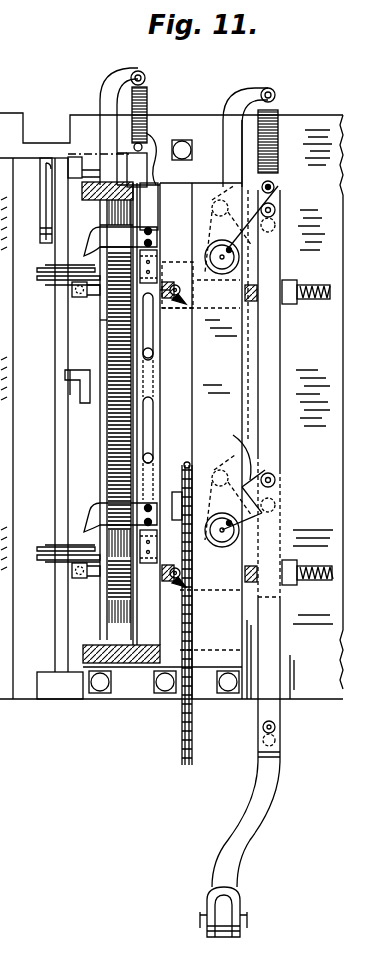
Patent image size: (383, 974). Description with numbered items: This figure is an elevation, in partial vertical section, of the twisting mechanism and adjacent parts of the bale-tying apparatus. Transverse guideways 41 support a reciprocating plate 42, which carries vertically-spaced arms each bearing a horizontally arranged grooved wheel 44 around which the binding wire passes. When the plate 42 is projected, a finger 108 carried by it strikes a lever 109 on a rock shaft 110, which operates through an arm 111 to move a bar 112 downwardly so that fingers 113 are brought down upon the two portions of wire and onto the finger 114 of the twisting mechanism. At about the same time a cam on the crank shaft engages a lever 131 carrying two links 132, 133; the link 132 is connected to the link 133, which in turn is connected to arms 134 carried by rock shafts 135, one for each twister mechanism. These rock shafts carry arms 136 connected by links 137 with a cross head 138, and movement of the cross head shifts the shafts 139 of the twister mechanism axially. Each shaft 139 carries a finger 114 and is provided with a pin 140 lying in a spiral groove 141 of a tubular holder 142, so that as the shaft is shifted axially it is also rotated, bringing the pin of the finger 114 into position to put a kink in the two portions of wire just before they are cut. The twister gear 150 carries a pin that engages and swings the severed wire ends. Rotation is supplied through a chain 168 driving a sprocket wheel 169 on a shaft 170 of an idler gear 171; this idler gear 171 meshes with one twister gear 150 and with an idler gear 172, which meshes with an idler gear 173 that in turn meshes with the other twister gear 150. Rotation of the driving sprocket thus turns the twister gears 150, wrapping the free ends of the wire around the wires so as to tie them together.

The transverse guideways 41 is at (30, 150).
The reciprocating plate 42 is at (60, 466).
The grooved wheel 44 is at (50, 281).
The finger 108 is at (37, 230).
The lever 109 is at (61, 401).
The rock shaft 110 is at (77, 157).
The arm 111 is at (147, 140).
The bar 112 is at (157, 258).
The fingers 113 is at (93, 236).
The finger of the twisting mechanism 114 is at (90, 302).
The lever 131 is at (223, 937).
The link 132 is at (242, 818).
The link 133 is at (273, 463).
The arms 134 is at (240, 250).
The rock shafts 135 is at (222, 262).
The arms 136 is at (212, 218).
The links 137 is at (275, 196).
The cross head 138 is at (280, 356).
The shafts of the twister mechanism 139 is at (318, 303).
The pin 140 is at (175, 286).
The spiral groove 141 is at (186, 300).
The tubular holder 142 is at (188, 292).
The twister gear 150 is at (107, 320).
The chain 168 is at (182, 757).
The sprocket wheel 169 is at (187, 463).
The shaft 170 is at (167, 497).
The idler gear 171 is at (107, 493).
The idler gear 172 is at (113, 427).
The idler gear 173 is at (117, 362).